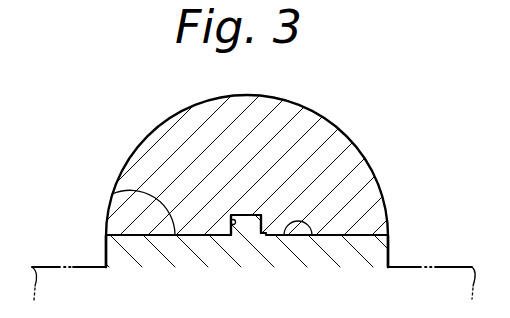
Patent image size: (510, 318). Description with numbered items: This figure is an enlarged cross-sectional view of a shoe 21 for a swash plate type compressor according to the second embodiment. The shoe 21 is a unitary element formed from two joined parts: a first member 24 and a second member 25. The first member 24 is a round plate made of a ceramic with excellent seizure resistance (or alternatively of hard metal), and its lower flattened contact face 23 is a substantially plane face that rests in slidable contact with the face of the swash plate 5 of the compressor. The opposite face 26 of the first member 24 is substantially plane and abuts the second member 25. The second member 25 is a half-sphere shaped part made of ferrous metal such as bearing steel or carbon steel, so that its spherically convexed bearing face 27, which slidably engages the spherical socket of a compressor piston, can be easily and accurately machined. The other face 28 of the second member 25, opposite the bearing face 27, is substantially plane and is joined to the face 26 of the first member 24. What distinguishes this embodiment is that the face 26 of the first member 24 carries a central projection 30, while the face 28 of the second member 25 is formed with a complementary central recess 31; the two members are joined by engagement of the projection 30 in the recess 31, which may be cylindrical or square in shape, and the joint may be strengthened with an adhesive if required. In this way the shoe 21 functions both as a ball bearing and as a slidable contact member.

The swash plate 5 is at (446, 267).
The shoe 21 is at (274, 181).
The flattened contact face 23 is at (223, 268).
The first member 24 is at (108, 250).
The second member 25 is at (363, 173).
The face 26 is at (312, 231).
The spherically convexed bearing face 27 is at (343, 132).
The face 28 is at (112, 194).
The central projection 30 is at (254, 213).
The central recess 31 is at (228, 215).